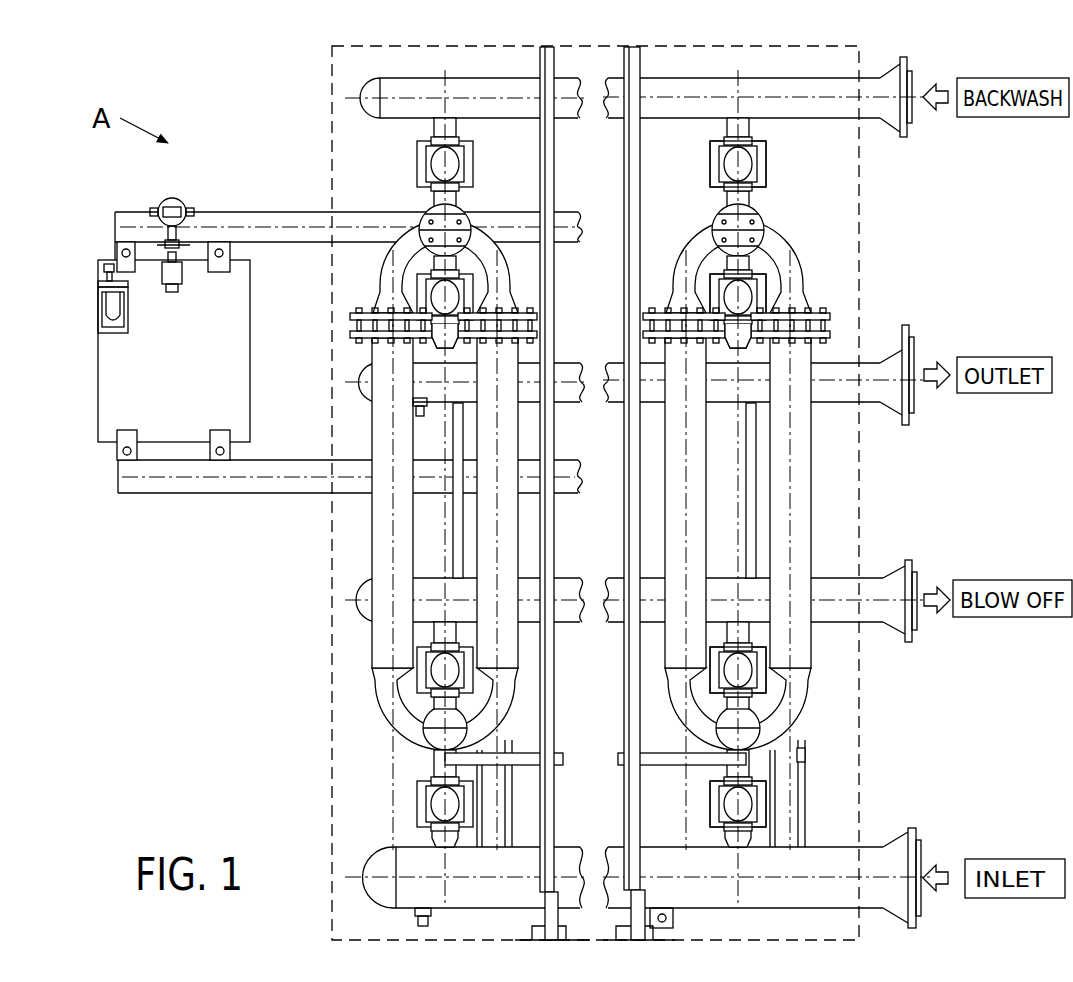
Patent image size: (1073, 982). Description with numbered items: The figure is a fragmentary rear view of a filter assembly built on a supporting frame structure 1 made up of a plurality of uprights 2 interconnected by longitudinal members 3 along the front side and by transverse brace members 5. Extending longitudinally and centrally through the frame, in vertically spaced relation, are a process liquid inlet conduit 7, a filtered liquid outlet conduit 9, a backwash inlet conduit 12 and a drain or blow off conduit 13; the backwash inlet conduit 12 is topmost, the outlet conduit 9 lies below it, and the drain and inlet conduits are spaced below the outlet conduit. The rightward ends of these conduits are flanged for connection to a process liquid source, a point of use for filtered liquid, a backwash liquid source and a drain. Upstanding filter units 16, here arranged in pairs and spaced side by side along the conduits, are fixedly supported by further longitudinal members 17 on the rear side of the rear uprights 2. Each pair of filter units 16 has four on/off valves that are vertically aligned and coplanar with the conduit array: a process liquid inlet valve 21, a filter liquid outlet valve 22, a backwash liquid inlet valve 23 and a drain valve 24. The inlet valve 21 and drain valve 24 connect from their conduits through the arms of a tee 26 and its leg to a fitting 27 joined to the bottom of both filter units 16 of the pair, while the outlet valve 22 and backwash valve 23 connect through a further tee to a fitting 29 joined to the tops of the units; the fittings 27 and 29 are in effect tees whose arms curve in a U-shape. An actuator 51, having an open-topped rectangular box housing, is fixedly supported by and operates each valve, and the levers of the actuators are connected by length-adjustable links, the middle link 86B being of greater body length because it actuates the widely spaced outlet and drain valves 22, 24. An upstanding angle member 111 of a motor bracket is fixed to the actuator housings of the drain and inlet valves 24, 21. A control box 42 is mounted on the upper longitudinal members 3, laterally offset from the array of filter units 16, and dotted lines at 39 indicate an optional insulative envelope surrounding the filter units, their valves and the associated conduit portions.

The supporting frame structure 1 is at (606, 480).
The uprights 2 is at (548, 62).
The longitudinal members 3 is at (272, 214).
The transverse brace members 5 is at (520, 936).
The process liquid inlet conduit 7 is at (783, 897).
The filtered liquid outlet conduit 9 is at (845, 392).
The backwash inlet conduit 12 is at (830, 92).
The drain (blow off) conduit 13 is at (874, 612).
The filter units 16 is at (369, 545).
The further longitudinal members 17 is at (428, 378).
The process liquid inlet valve 21 is at (750, 806).
The filter liquid outlet valve 22 is at (745, 297).
The backwash liquid inlet valve 23 is at (744, 165).
The drain valve 24 is at (747, 668).
The tee 26 is at (750, 773).
The fitting 27 is at (802, 742).
The fitting 29 is at (789, 238).
The insulative envelope or box 39 is at (332, 716).
The control box 42 is at (100, 357).
The actuator 51 is at (764, 150).
The middle link 86B is at (756, 483).
The upstanding angle member 111 is at (786, 832).